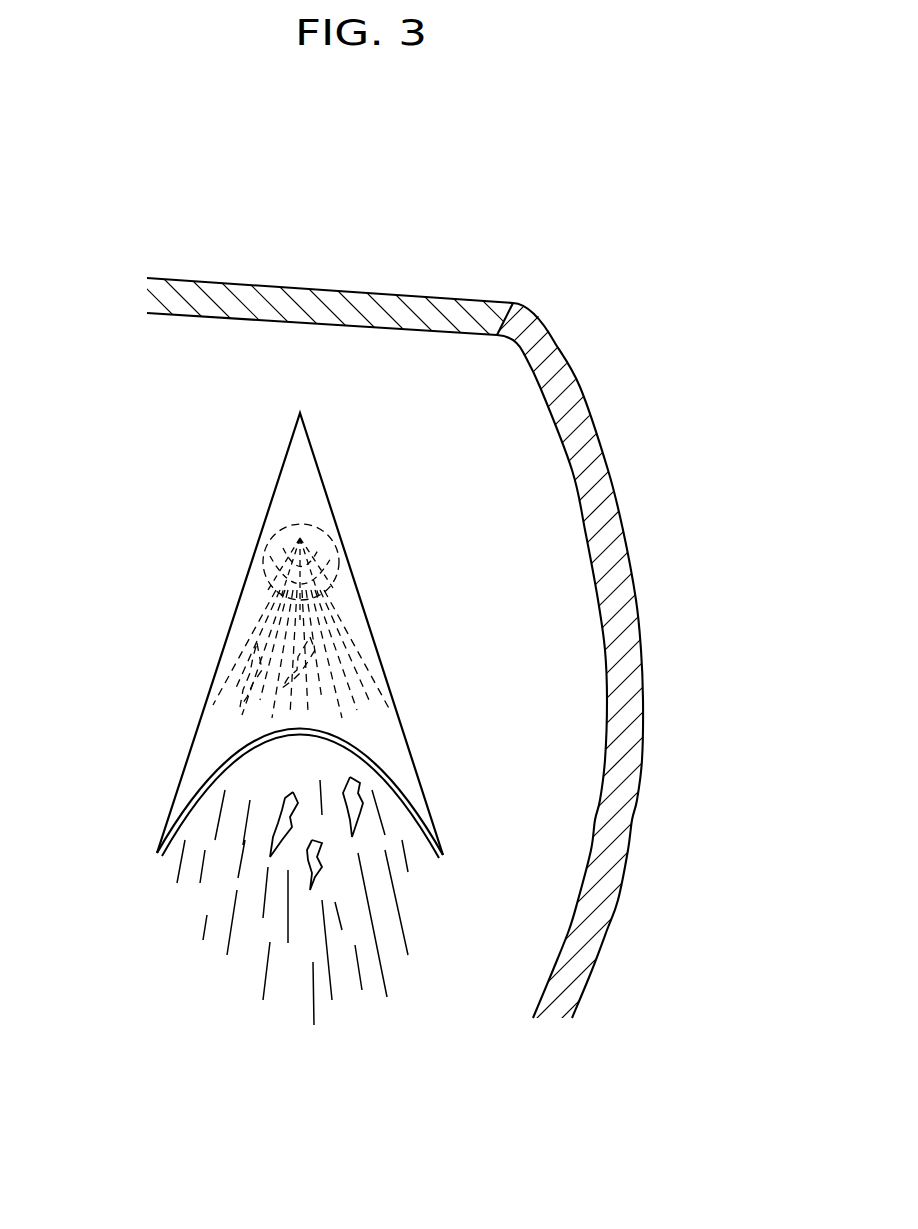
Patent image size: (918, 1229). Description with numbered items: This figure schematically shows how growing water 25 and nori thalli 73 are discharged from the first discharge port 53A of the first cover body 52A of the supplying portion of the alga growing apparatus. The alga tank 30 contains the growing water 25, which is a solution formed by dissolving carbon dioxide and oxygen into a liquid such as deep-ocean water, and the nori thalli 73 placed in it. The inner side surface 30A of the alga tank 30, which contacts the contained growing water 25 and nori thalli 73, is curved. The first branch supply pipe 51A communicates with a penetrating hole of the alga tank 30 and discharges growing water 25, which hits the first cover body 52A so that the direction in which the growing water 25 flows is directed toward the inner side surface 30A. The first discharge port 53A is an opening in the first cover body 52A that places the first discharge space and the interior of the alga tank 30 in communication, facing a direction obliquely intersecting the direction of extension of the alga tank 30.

The alga tank 30 is at (458, 297).
The inner side surface 30A is at (578, 490).
The first branch supply pipe 51A is at (322, 533).
The first cover body 52A is at (238, 598).
The first discharge port 53A is at (164, 870).
The growing water 25 is at (205, 928).
The nori thalli 73 is at (325, 867).